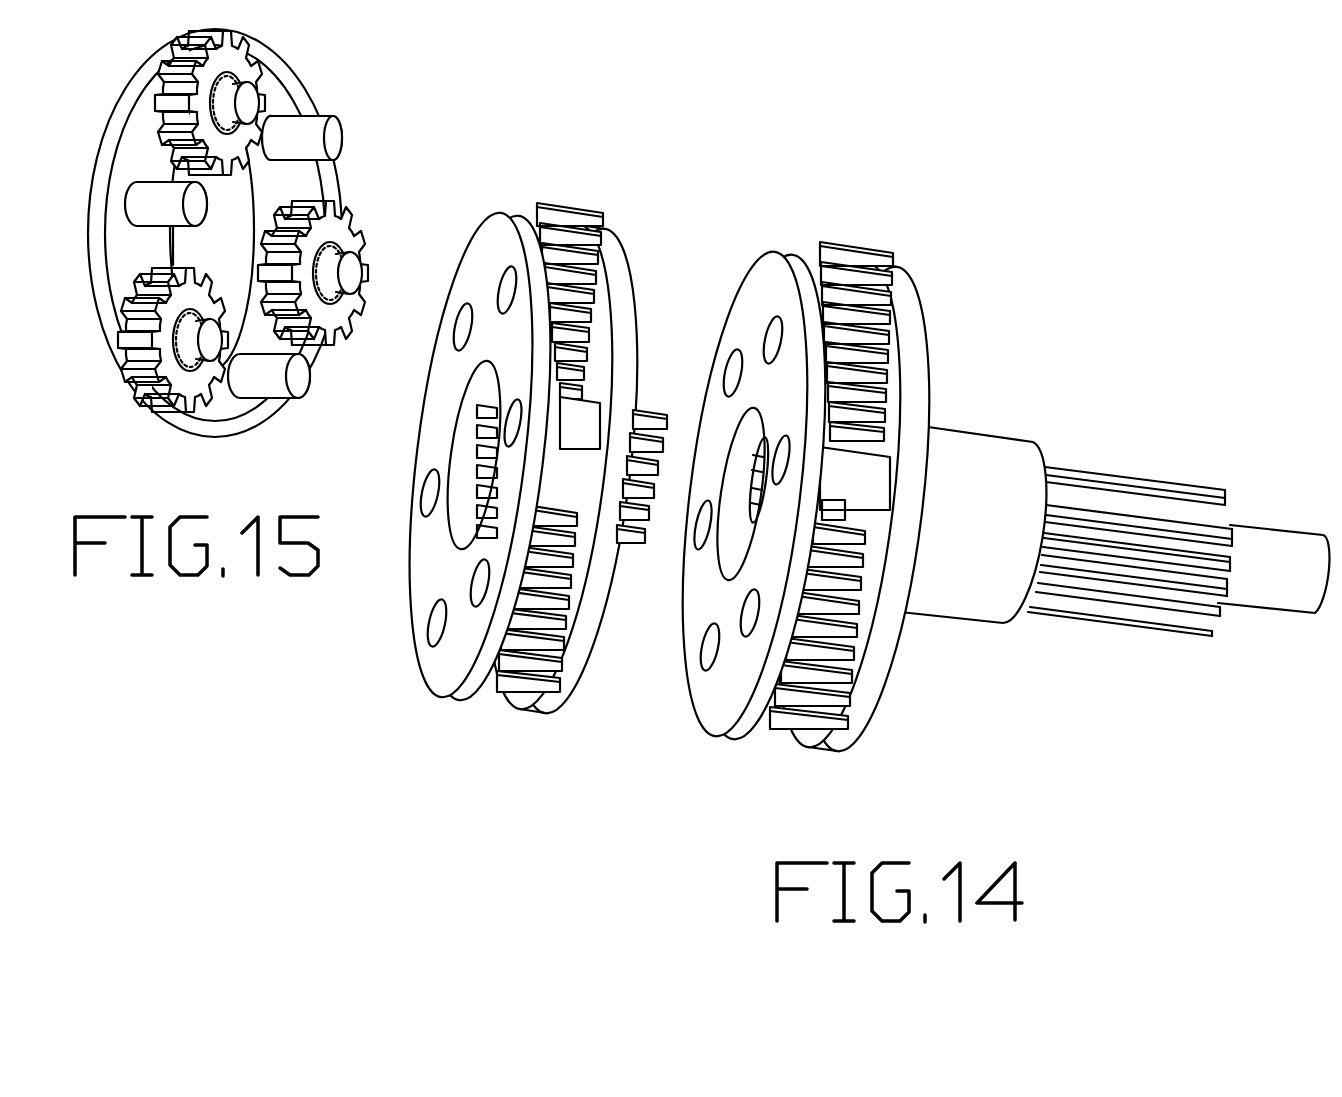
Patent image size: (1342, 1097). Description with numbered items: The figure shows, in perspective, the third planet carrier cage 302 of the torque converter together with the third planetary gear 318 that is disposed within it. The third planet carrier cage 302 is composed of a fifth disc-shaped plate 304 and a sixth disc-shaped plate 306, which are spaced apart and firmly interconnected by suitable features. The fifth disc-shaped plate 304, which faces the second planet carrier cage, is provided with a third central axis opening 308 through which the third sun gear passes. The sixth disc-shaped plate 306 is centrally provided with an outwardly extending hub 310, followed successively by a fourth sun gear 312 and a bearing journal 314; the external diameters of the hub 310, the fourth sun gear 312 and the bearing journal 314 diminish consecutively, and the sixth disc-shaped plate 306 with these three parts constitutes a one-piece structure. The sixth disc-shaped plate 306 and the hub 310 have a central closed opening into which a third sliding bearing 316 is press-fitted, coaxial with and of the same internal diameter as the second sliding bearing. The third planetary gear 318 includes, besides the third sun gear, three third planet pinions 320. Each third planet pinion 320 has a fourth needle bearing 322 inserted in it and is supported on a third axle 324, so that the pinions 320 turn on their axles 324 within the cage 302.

In FIG. 14, the third planet carrier cage 302 is at (915, 157).
In FIG. 14, the fifth disc-shaped plate 304 is at (765, 297).
In FIG. 14, the sixth disc-shaped plate 306 is at (912, 327).
In FIG. 14, the third central axis opening 308 is at (731, 480).
In FIG. 14, the hub 310 is at (990, 508).
In FIG. 14, the fourth sun gear 312 is at (1195, 513).
In FIG. 14, the bearing journal 314 is at (1270, 583).
In FIG. 14, the third sliding bearing 316 is at (843, 507).
In FIG. 14, the third planetary gear 318 is at (795, 722).
In FIG. 15, the third planet pinion 320 is at (343, 233).
In FIG. 15, the fourth needle bearing 322 is at (334, 298).
In FIG. 15, the third axle 324 is at (216, 343).